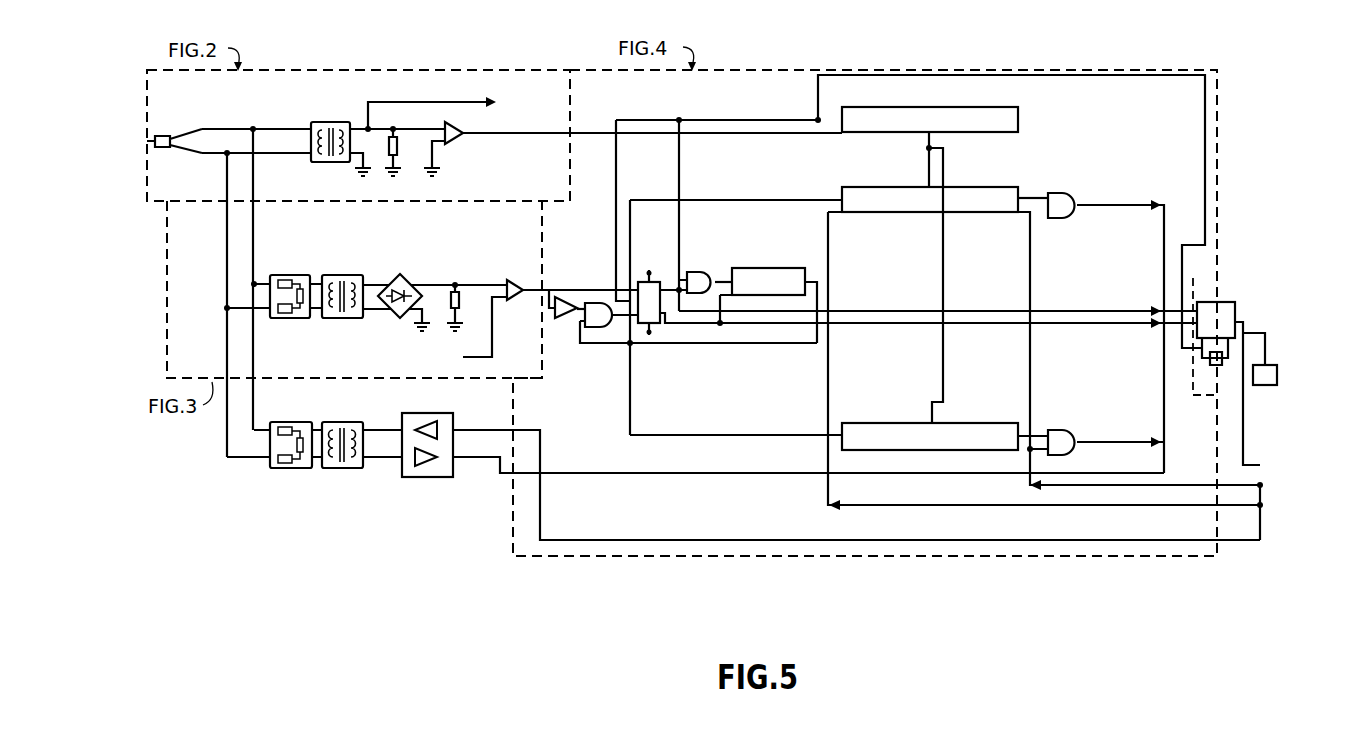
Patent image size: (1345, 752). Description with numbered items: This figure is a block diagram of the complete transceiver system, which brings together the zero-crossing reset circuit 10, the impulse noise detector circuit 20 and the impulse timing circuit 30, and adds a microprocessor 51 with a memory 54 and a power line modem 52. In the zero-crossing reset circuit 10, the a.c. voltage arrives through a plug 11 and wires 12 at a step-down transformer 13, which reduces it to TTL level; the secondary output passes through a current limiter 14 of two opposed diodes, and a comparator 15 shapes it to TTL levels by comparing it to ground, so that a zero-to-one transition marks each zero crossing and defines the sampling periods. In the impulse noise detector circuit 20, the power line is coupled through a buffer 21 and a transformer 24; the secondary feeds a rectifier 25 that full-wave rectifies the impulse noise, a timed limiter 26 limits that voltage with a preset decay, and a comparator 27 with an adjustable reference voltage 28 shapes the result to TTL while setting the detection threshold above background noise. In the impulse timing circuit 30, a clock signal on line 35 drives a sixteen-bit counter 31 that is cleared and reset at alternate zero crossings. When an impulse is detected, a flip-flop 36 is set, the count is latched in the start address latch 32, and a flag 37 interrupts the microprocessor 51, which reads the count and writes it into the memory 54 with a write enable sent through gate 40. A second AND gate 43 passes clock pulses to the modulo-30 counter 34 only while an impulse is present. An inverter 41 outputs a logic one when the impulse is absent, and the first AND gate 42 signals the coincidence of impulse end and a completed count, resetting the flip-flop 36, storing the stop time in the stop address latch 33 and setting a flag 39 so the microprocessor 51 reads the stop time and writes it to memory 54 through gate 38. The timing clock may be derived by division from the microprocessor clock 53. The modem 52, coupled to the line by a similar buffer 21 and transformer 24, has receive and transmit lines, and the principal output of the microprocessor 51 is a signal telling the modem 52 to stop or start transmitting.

The zero-crossing reset circuit 10 is at (364, 78).
The plug 11 is at (161, 135).
The wires 12 is at (213, 129).
The step-down transformer 13 is at (316, 122).
The current limiter 14 is at (398, 141).
The comparator 15 is at (458, 135).
The impulse noise detector circuit 20 is at (340, 358).
The buffer 21 is at (297, 275).
The transformer 24 is at (327, 275).
The rectifier 25 is at (394, 279).
The timed limiter 26 is at (461, 291).
The comparator 27 is at (511, 280).
The adjustable reference voltage 28 is at (463, 357).
The impulse timing circuit 30 is at (727, 83).
The sixteen-bit counter 31 is at (904, 110).
The start address latch 32 is at (959, 191).
The stop address latch 33 is at (949, 432).
The modulo-30 counter 34 is at (762, 290).
The clock line 35 is at (817, 85).
The flip-flop 36 is at (656, 290).
The flag 37 is at (1105, 309).
The gate 38 is at (1062, 438).
The flag 39 is at (1111, 325).
The gate 40 is at (1058, 197).
The inverter 41 is at (562, 319).
The first AND gate 42 is at (592, 303).
The second AND gate 43 is at (694, 274).
The microprocessor 51 is at (1228, 312).
The power line modem 52 is at (450, 477).
The microprocessor clock 53 is at (1212, 367).
The memory 54 is at (1270, 372).